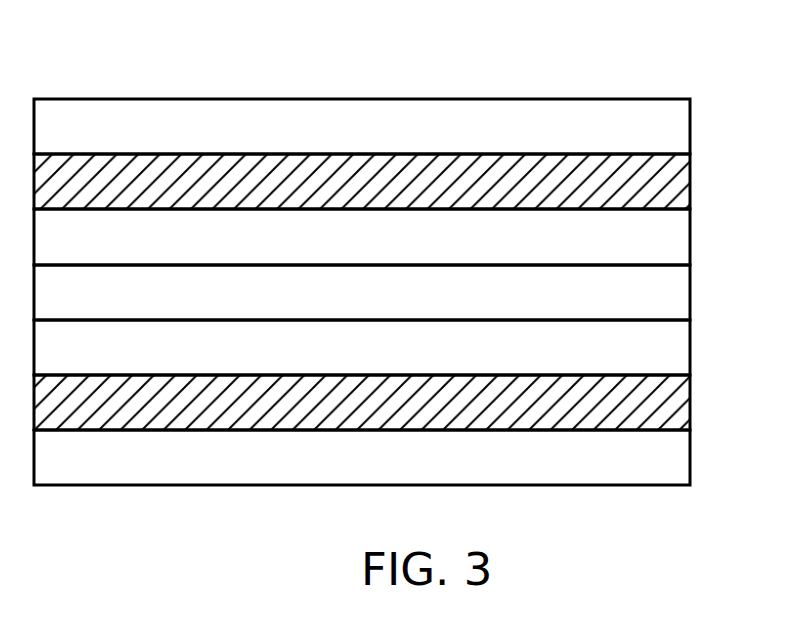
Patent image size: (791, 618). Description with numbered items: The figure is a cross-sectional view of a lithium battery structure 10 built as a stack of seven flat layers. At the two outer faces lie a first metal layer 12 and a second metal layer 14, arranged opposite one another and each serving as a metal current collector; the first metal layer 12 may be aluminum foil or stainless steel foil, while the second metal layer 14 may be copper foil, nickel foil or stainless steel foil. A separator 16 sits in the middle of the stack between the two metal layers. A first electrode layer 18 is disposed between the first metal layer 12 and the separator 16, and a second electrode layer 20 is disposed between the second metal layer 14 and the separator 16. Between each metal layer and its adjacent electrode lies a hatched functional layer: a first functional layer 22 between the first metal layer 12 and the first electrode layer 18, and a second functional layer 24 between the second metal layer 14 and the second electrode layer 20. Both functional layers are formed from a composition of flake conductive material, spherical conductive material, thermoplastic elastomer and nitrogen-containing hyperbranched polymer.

The lithium battery structure 10 is at (670, 53).
The first metal layer 12 is at (680, 459).
The second metal layer 14 is at (680, 127).
The separator 16 is at (680, 294).
The first electrode layer 18 is at (680, 349).
The second electrode layer 20 is at (680, 239).
The first functional layer 22 is at (680, 404).
The second functional layer 24 is at (680, 184).